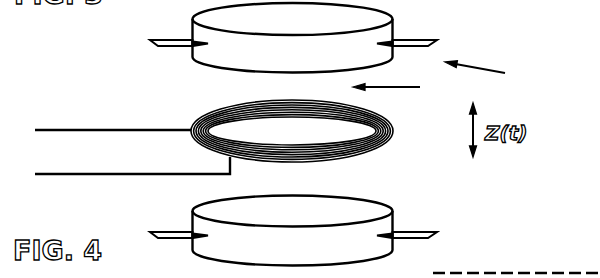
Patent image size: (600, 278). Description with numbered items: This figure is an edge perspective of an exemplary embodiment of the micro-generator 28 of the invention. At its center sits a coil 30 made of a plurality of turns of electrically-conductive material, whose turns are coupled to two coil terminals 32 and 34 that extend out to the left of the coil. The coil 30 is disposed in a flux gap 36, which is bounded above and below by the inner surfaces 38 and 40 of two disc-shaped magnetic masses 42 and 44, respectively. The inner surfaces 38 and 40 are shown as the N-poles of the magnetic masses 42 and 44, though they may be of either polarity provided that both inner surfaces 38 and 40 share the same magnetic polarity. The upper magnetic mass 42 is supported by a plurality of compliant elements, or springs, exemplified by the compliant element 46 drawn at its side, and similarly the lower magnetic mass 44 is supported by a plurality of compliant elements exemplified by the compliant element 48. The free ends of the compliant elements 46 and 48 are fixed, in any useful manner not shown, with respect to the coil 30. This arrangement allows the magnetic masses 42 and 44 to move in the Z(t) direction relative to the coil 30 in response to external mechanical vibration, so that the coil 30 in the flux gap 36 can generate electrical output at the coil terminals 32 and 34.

The micro-generator 28 is at (493, 74).
The coil 30 is at (393, 132).
The coil terminal 32 is at (90, 128).
The coil terminal 34 is at (90, 174).
The flux gap 36 is at (405, 90).
The inner surface 38 is at (248, 72).
The inner surface 40 is at (337, 208).
The magnetic mass 42 is at (307, 64).
The magnetic mass 44 is at (307, 253).
The compliant element 46 is at (410, 37).
The compliant element 48 is at (412, 230).